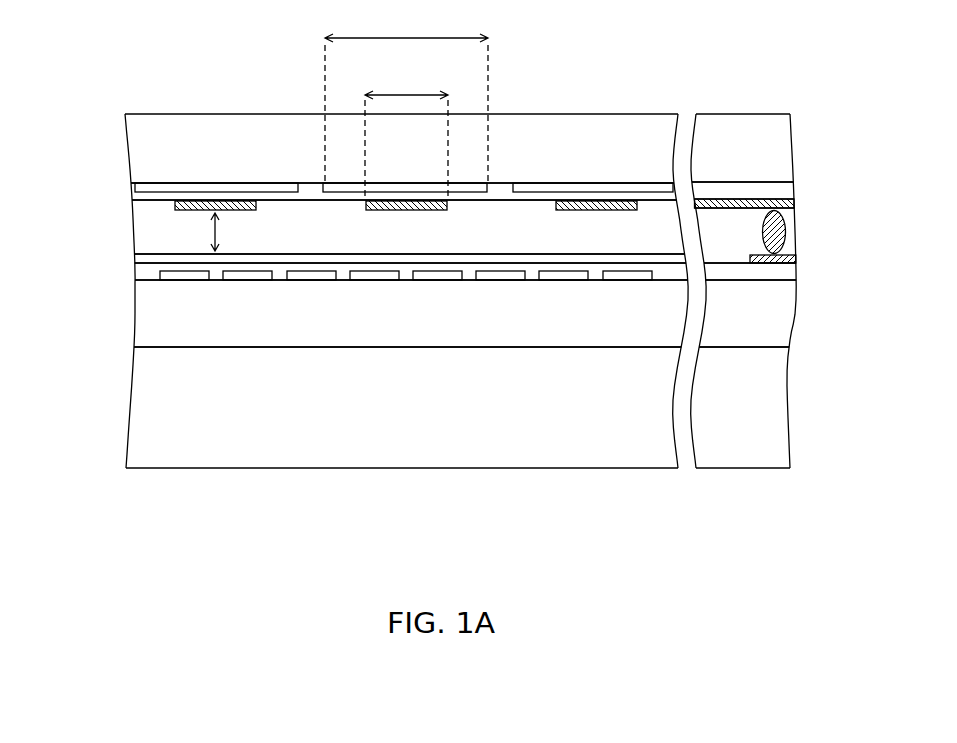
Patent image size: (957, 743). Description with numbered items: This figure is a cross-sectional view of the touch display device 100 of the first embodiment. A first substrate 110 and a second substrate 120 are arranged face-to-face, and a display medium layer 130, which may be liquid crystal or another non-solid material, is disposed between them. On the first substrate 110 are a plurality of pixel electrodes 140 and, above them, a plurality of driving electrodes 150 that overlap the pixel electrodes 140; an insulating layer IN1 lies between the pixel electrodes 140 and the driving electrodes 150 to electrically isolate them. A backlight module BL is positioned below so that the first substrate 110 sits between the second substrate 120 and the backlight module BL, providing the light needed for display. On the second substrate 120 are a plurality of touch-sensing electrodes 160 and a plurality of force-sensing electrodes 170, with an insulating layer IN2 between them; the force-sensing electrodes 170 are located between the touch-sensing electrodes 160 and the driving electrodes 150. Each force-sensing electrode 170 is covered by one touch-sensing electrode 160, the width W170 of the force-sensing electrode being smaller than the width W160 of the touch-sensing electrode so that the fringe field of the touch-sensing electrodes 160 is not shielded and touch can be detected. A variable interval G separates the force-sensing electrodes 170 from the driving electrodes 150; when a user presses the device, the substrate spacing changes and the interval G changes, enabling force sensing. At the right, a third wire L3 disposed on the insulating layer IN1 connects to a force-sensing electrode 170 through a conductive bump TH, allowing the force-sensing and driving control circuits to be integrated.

The touch display device 100 is at (795, 517).
The first substrate 110 is at (147, 335).
The second substrate 120 is at (133, 135).
The display medium layer 130 is at (147, 233).
The pixel electrodes 140 is at (170, 277).
The driving electrodes 150 is at (140, 270).
The touch-sensing electrodes 160 is at (143, 182).
The force-sensing electrodes 170 is at (173, 203).
The insulating layer IN1 is at (133, 272).
The insulating layer IN2 is at (128, 192).
The backlight module BL is at (143, 407).
The conductive bumps TH is at (780, 233).
The third wires L3 is at (792, 259).
The variable interval G is at (222, 232).
The width of each touch-sensing electrode W160 is at (406, 95).
The width of each force-sensing electrode W170 is at (406, 131).